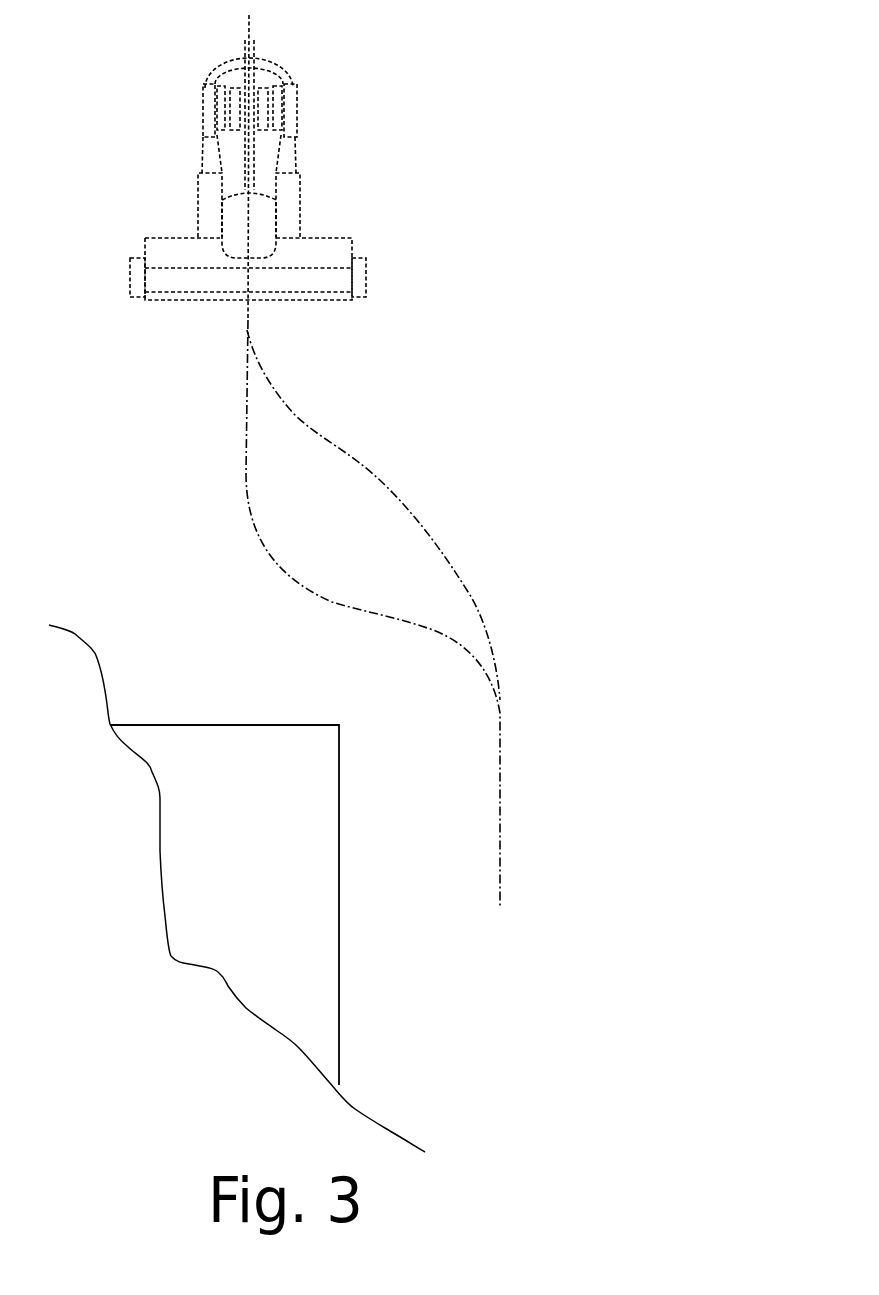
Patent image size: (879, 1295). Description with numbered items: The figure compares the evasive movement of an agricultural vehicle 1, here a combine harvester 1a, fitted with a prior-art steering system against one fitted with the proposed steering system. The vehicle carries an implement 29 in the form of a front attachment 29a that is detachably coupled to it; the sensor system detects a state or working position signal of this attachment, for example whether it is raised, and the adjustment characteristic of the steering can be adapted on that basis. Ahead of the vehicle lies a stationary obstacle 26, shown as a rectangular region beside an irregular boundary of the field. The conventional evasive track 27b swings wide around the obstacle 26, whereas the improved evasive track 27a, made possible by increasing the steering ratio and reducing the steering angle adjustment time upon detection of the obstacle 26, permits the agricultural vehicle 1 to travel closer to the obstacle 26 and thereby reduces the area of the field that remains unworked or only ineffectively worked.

The agricultural vehicle 1 is at (360, 161).
The combine harvester 1a is at (366, 125).
The implement 29 is at (338, 269).
The front attachment 29a is at (337, 277).
The improved evasive track 27a is at (332, 602).
The conventional evasive track 27b is at (393, 498).
The obstacle 26 is at (263, 840).